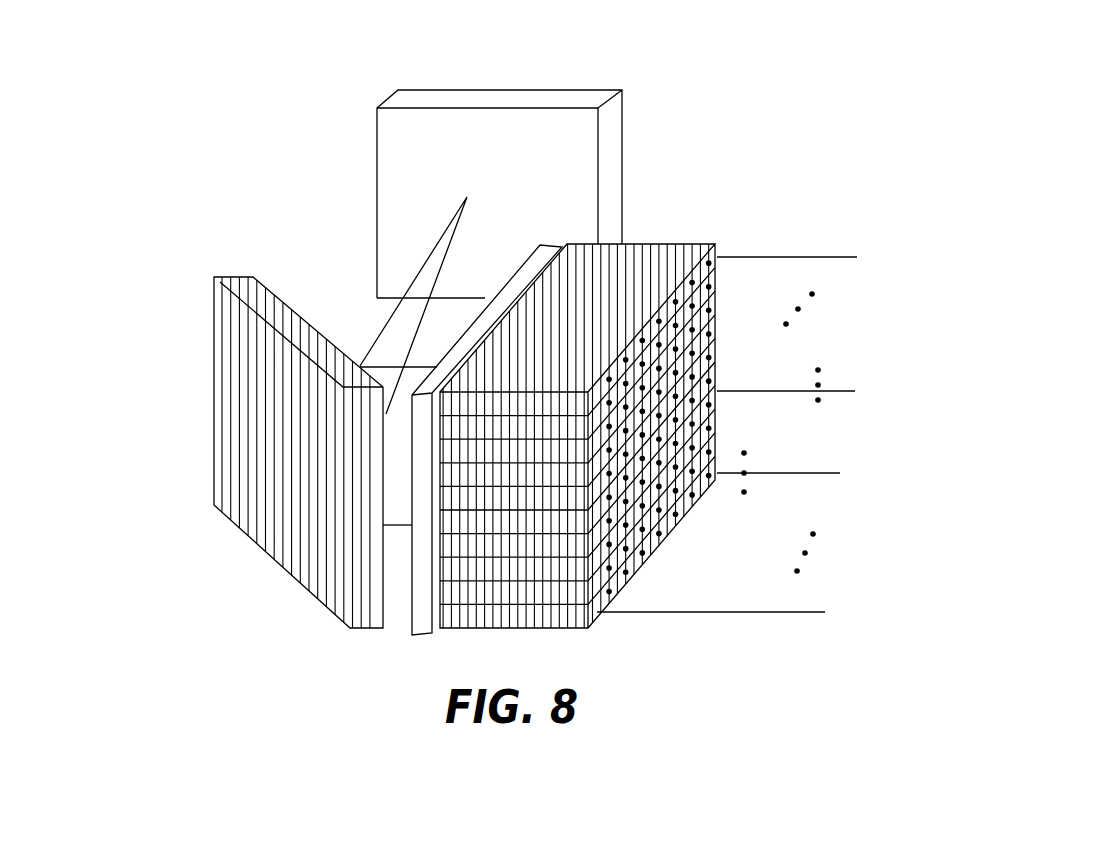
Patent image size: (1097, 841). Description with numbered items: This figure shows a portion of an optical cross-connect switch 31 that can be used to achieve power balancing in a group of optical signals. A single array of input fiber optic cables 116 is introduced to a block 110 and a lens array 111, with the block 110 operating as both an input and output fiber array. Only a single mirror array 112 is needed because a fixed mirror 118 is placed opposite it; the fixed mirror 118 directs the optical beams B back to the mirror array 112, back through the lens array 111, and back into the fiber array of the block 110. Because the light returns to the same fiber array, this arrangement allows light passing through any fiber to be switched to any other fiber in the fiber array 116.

The optical cross-connect switch 31 is at (640, 50).
The fixed mirror 118 is at (412, 98).
The optical beams B is at (418, 270).
The mirror array 112 is at (213, 378).
The lens array 111 is at (557, 243).
The block 110 is at (675, 243).
The input fiber optic cables 116 is at (682, 612).